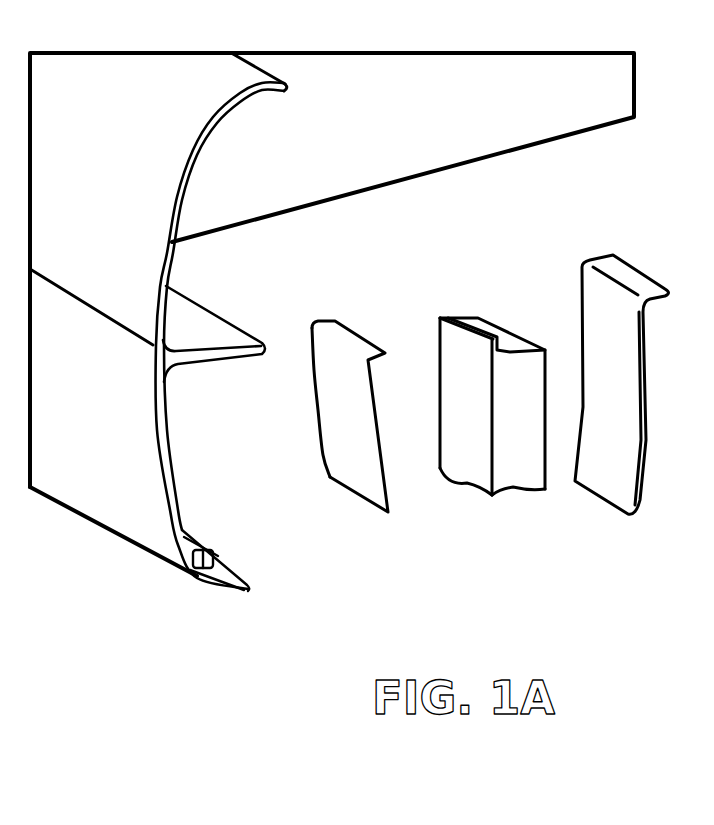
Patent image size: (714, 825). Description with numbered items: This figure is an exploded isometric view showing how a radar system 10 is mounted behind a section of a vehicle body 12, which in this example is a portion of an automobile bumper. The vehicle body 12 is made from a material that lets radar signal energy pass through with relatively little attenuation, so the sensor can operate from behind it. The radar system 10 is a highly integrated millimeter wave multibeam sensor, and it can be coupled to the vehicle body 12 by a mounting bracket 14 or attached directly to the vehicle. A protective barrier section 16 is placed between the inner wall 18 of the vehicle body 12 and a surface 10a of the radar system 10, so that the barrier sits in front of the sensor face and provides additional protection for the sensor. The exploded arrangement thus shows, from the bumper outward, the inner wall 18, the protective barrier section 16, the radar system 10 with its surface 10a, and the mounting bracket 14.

The radar system 10 is at (464, 417).
The surface of the sensor 10a is at (438, 357).
The vehicle body 12 is at (208, 308).
The mounting bracket 14 is at (605, 503).
The protective barrier section 16 is at (358, 494).
The inner wall 18 is at (222, 590).